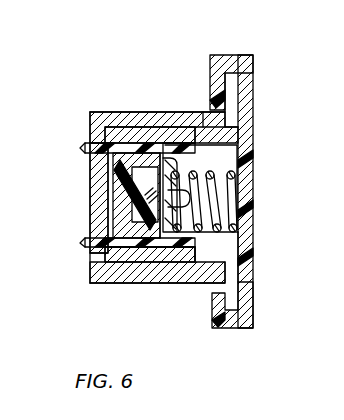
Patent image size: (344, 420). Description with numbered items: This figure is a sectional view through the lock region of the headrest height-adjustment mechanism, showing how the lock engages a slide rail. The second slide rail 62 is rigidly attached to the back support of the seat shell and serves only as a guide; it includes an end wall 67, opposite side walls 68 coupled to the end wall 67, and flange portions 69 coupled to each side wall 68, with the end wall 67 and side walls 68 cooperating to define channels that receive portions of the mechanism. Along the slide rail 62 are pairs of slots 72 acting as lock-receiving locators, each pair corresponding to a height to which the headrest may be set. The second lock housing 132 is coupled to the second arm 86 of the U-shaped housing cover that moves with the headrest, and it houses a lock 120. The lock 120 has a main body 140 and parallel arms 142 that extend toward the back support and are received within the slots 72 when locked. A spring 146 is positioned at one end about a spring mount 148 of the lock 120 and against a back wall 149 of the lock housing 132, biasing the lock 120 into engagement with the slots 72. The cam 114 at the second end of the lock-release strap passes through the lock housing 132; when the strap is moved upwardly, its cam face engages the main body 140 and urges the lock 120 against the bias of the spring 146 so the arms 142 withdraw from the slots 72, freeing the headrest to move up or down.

The second slide rail 62 is at (99, 109).
The end wall 67 is at (96, 221).
The side walls 68 is at (136, 111).
The flange portions 69 is at (230, 296).
The slots 72 is at (88, 150).
The second arm 86 is at (237, 58).
The cam 114 is at (124, 188).
The lock 120 is at (173, 118).
The second lock housing 132 is at (203, 110).
The main body 140 is at (150, 262).
The parallel arms 142 is at (125, 133).
The spring 146 is at (213, 155).
The spring mount 148 is at (180, 200).
The back wall 149 is at (248, 228).